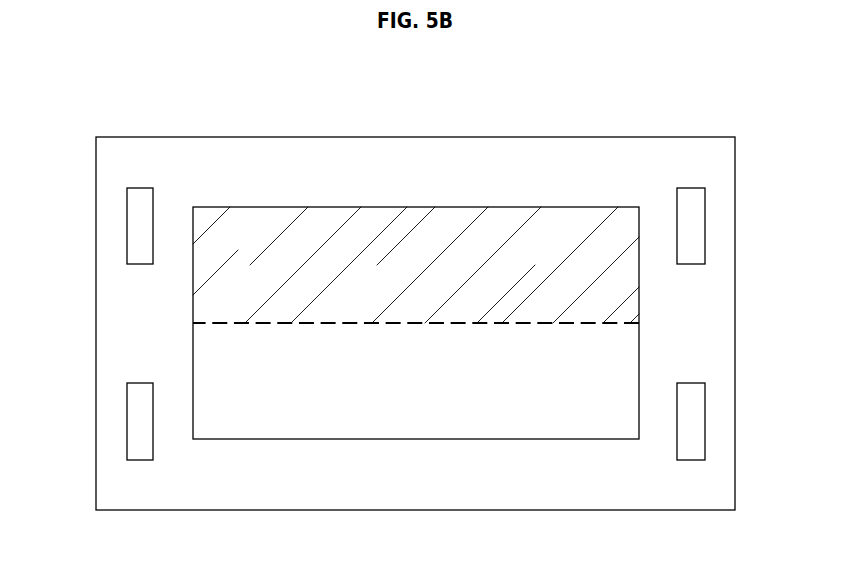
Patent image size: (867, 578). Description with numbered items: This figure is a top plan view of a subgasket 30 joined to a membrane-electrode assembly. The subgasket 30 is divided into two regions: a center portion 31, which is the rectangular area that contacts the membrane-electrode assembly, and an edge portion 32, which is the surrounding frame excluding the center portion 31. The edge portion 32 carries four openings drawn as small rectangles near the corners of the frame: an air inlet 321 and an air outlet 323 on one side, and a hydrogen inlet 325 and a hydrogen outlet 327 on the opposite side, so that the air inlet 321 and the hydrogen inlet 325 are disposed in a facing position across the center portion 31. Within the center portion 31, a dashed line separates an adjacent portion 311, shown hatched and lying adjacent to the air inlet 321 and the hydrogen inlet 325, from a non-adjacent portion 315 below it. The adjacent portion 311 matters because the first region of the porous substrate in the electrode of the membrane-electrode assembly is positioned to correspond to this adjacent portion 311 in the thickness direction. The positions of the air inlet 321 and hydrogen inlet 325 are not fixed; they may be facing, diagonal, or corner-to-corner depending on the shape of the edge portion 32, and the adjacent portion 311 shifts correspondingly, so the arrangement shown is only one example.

The subgasket 30 is at (654, 120).
The center portion 31 is at (207, 207).
The adjacent portion 311 is at (392, 207).
The non-adjacent portion 315 is at (377, 410).
The edge portion 32 is at (522, 155).
The air inlet 321 is at (695, 225).
The air outlet 323 is at (695, 424).
The hydrogen inlet 325 is at (137, 220).
The hydrogen outlet 327 is at (137, 421).